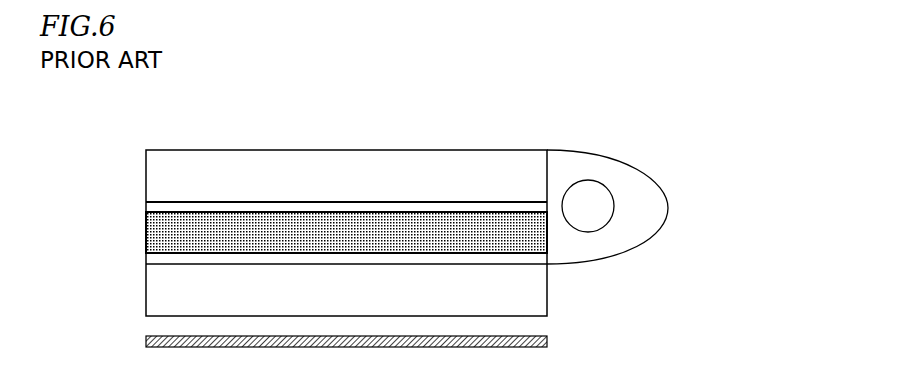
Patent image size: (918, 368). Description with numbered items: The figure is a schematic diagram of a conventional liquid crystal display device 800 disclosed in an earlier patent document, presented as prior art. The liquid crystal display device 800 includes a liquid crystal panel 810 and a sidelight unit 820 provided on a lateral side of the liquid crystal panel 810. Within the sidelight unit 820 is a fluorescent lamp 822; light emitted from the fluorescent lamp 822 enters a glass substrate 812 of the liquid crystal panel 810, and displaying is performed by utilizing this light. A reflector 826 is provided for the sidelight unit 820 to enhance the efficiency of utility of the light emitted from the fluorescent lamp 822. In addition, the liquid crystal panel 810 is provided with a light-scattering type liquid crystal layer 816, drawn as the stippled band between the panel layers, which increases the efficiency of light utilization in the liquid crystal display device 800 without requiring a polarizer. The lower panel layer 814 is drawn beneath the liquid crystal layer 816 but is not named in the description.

The liquid crystal display device 800 is at (649, 127).
The liquid crystal panel 810 is at (145, 137).
The glass substrate 812 is at (157, 170).
The lower layer 814 is at (157, 285).
The light-scattering type liquid crystal layer 816 is at (157, 233).
The sidelight unit 820 is at (673, 166).
The fluorescent lamp 822 is at (591, 222).
The reflector 826 is at (670, 210).